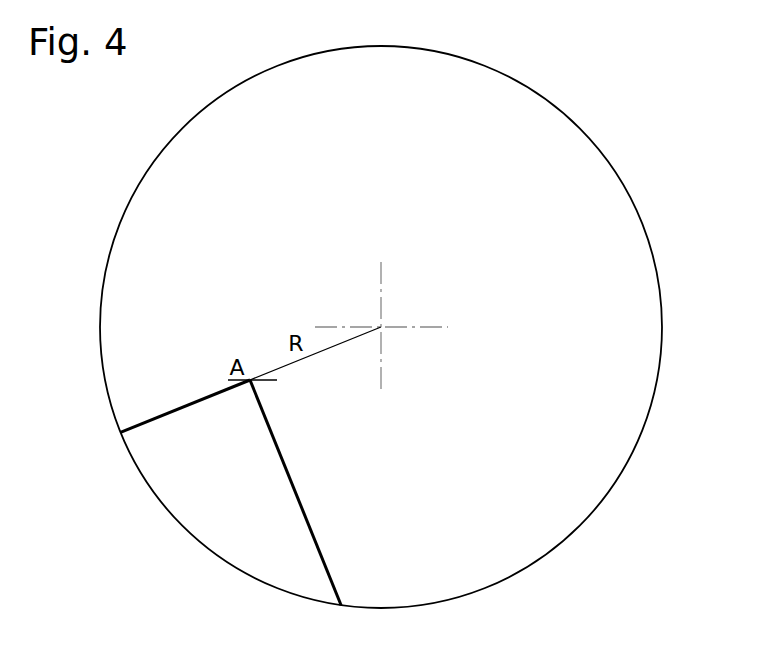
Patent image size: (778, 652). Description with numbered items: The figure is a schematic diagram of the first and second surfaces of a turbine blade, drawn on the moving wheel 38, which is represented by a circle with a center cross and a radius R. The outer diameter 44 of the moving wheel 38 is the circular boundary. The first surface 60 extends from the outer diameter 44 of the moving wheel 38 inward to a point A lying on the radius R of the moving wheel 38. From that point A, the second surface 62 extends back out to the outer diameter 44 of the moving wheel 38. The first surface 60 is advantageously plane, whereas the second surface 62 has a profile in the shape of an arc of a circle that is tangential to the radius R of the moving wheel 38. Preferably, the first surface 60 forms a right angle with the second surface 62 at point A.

The moving wheel 38 is at (420, 327).
The outer diameter 44 is at (580, 122).
The second surface 62 is at (167, 412).
The first surface 60 is at (298, 493).